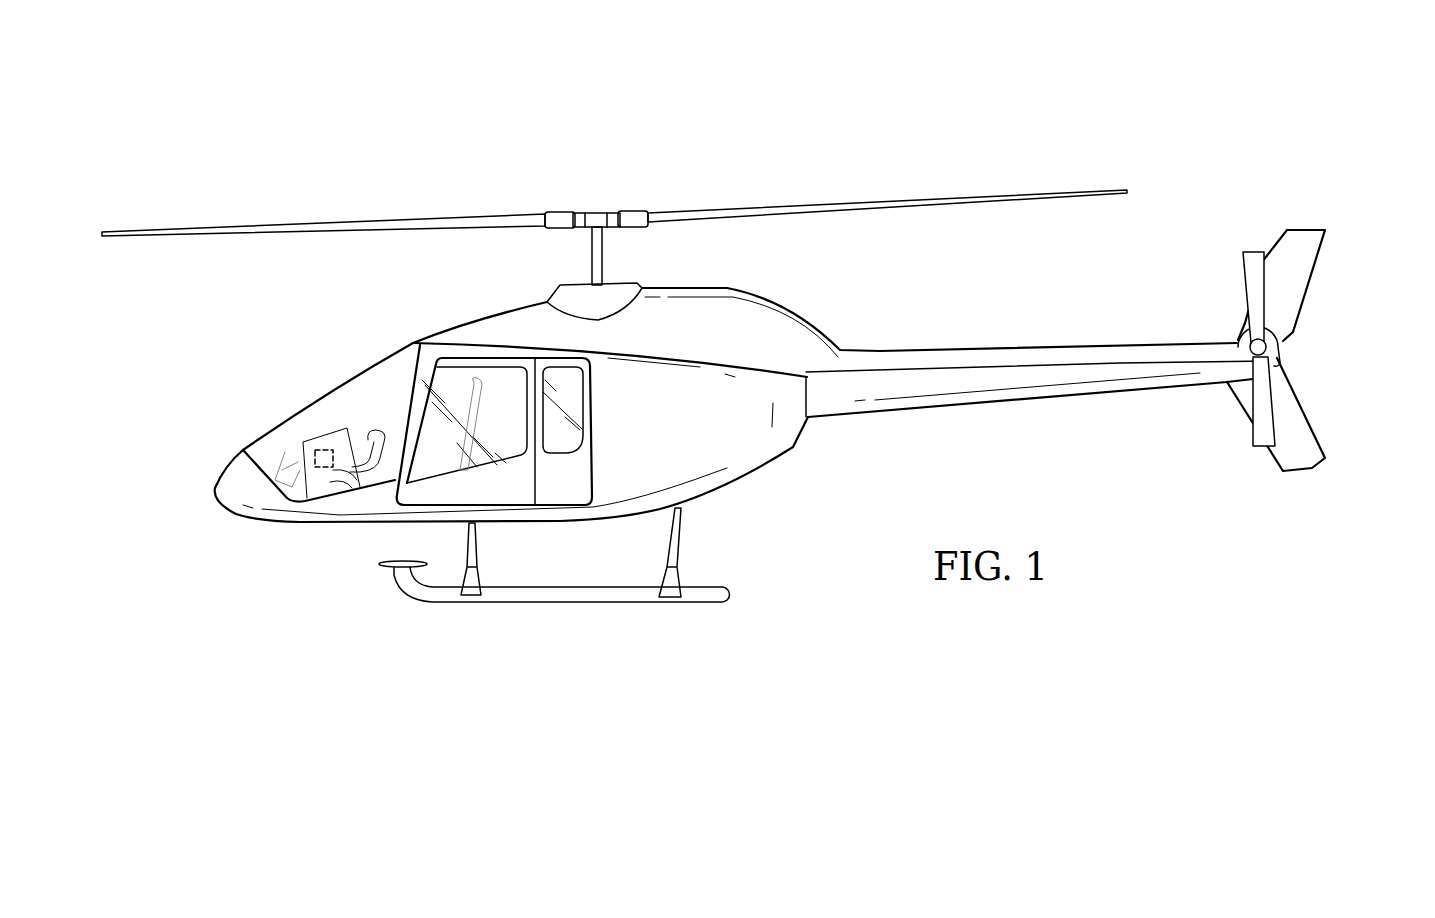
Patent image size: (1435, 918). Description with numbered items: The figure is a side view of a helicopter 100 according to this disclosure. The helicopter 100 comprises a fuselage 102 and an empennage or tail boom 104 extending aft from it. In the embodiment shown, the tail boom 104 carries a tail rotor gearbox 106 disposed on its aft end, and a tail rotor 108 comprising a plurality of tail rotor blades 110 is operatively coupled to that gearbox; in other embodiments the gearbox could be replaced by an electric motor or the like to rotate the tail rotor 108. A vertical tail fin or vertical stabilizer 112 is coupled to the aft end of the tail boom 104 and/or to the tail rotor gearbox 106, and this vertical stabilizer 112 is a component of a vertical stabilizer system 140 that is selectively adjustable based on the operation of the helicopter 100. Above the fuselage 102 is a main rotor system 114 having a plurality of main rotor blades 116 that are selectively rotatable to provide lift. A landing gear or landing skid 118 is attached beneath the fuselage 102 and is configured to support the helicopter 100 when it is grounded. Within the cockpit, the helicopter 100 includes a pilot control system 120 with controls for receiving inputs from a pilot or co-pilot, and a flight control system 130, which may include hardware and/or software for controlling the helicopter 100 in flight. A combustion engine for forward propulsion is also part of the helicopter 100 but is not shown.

The helicopter 100 is at (1065, 102).
The fuselage 102 is at (258, 521).
The tail boom 104 is at (1017, 400).
The tail rotor gearbox 106 is at (1237, 352).
The tail rotor 108 is at (1279, 346).
The tail rotor blades 110 is at (1243, 275).
The vertical stabilizer 112 is at (1309, 411).
The main rotor system 114 is at (597, 212).
The main rotor blades 116 is at (337, 223).
The landing skid 118 is at (678, 540).
The pilot control system 120 is at (312, 432).
The flight control system 130 is at (325, 467).
The vertical stabilizer system 140 is at (1350, 281).